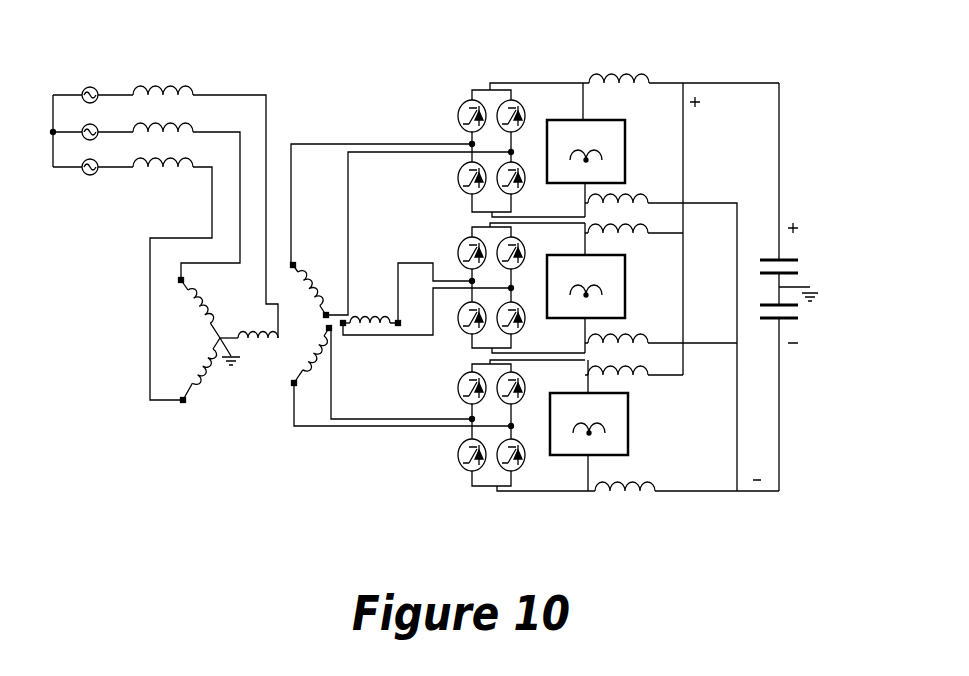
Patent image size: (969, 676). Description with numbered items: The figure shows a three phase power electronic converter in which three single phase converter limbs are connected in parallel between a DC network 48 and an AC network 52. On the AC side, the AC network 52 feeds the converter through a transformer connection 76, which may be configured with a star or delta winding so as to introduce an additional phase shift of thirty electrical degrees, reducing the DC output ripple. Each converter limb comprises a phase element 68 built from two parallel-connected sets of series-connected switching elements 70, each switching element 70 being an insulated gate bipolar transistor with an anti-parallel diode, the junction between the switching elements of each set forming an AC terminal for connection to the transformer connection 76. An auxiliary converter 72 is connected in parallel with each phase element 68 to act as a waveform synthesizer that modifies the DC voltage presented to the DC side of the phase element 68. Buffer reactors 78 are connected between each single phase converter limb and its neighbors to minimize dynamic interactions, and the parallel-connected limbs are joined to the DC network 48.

The AC network 52 is at (85, 78).
The transformer connection 76 is at (266, 367).
The phase element 68 is at (484, 299).
The series-connected switching element 70 is at (462, 95).
The auxiliary converter 72 is at (613, 298).
The buffer reactor 78 is at (617, 73).
The DC network 48 is at (786, 85).